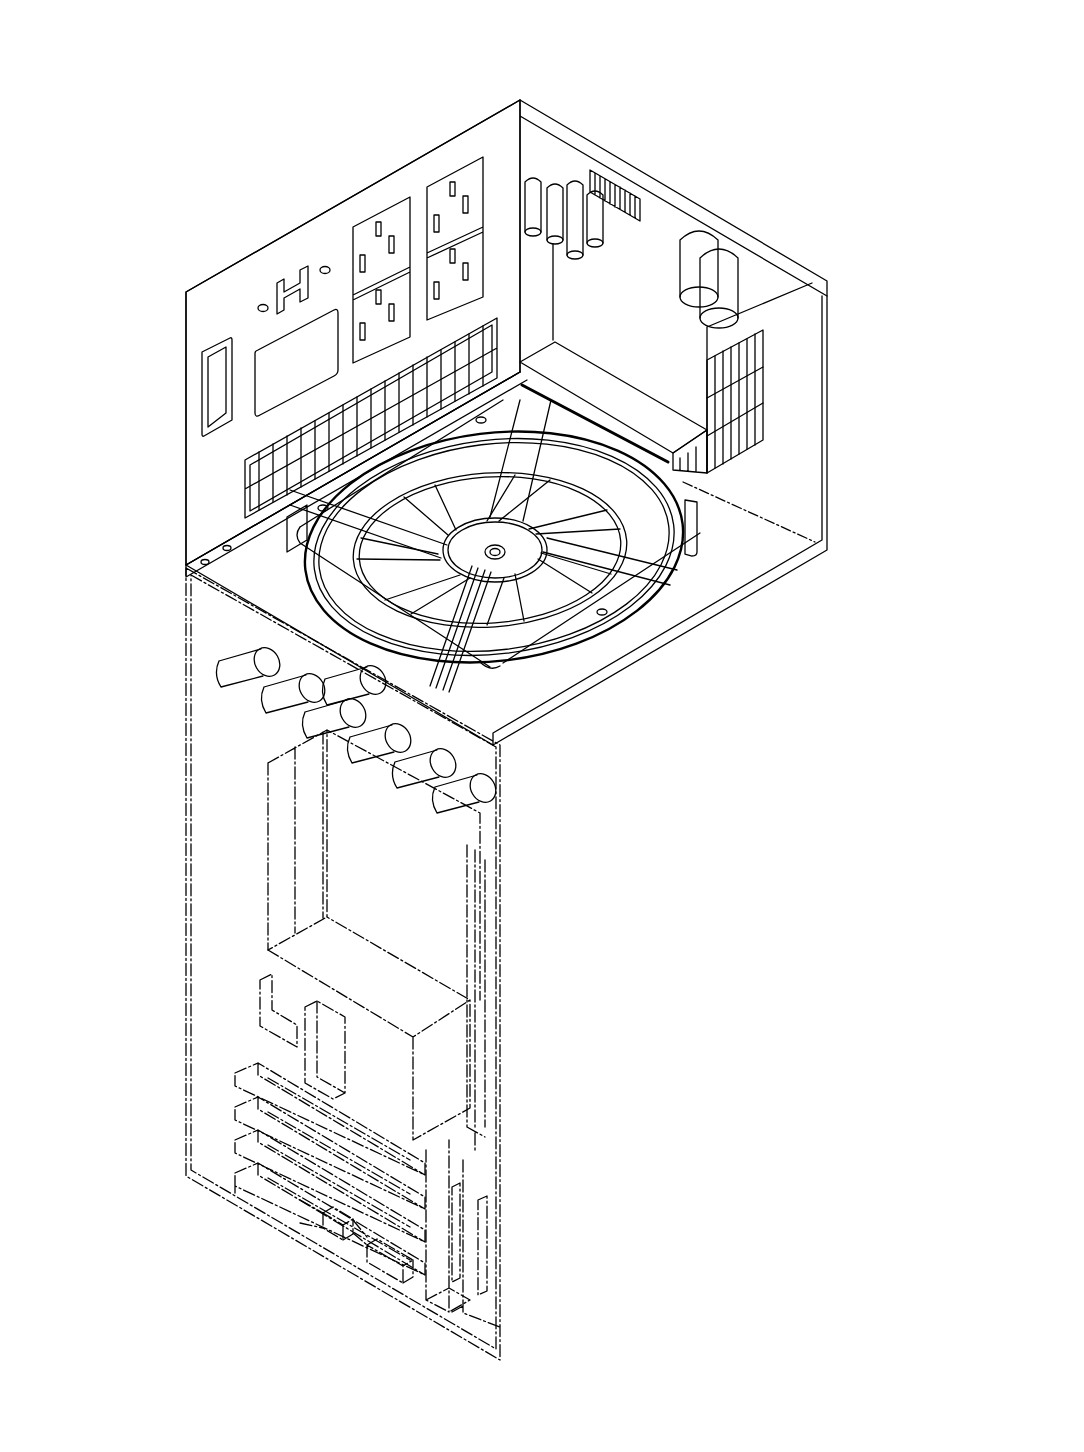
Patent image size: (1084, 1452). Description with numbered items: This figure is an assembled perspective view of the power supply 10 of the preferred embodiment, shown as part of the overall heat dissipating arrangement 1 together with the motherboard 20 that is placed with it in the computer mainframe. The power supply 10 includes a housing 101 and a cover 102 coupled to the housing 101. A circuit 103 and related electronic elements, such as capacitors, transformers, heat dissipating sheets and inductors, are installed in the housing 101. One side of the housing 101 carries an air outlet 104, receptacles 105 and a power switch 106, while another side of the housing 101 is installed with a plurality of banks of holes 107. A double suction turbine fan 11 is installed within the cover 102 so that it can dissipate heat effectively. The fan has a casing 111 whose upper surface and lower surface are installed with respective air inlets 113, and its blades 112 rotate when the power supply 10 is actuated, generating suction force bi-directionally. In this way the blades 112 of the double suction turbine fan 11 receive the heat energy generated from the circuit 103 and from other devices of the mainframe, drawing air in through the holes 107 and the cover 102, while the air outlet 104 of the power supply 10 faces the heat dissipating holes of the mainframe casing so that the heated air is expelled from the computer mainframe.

The power supply apparatus 1 is at (633, 102).
The power supply 10 is at (760, 233).
The housing 101 is at (282, 233).
The cover 102 is at (220, 570).
The circuit 103 is at (630, 278).
The air outlet 104 is at (270, 470).
The receptacles 105 is at (393, 223).
The power switch 106 is at (212, 382).
The banks of holes 107 is at (757, 387).
The double suction turbine fan 11 is at (657, 600).
The casing 111 is at (580, 630).
The blades 112 is at (507, 613).
The air inlets 113 is at (545, 620).
The motherboard 20 is at (187, 955).